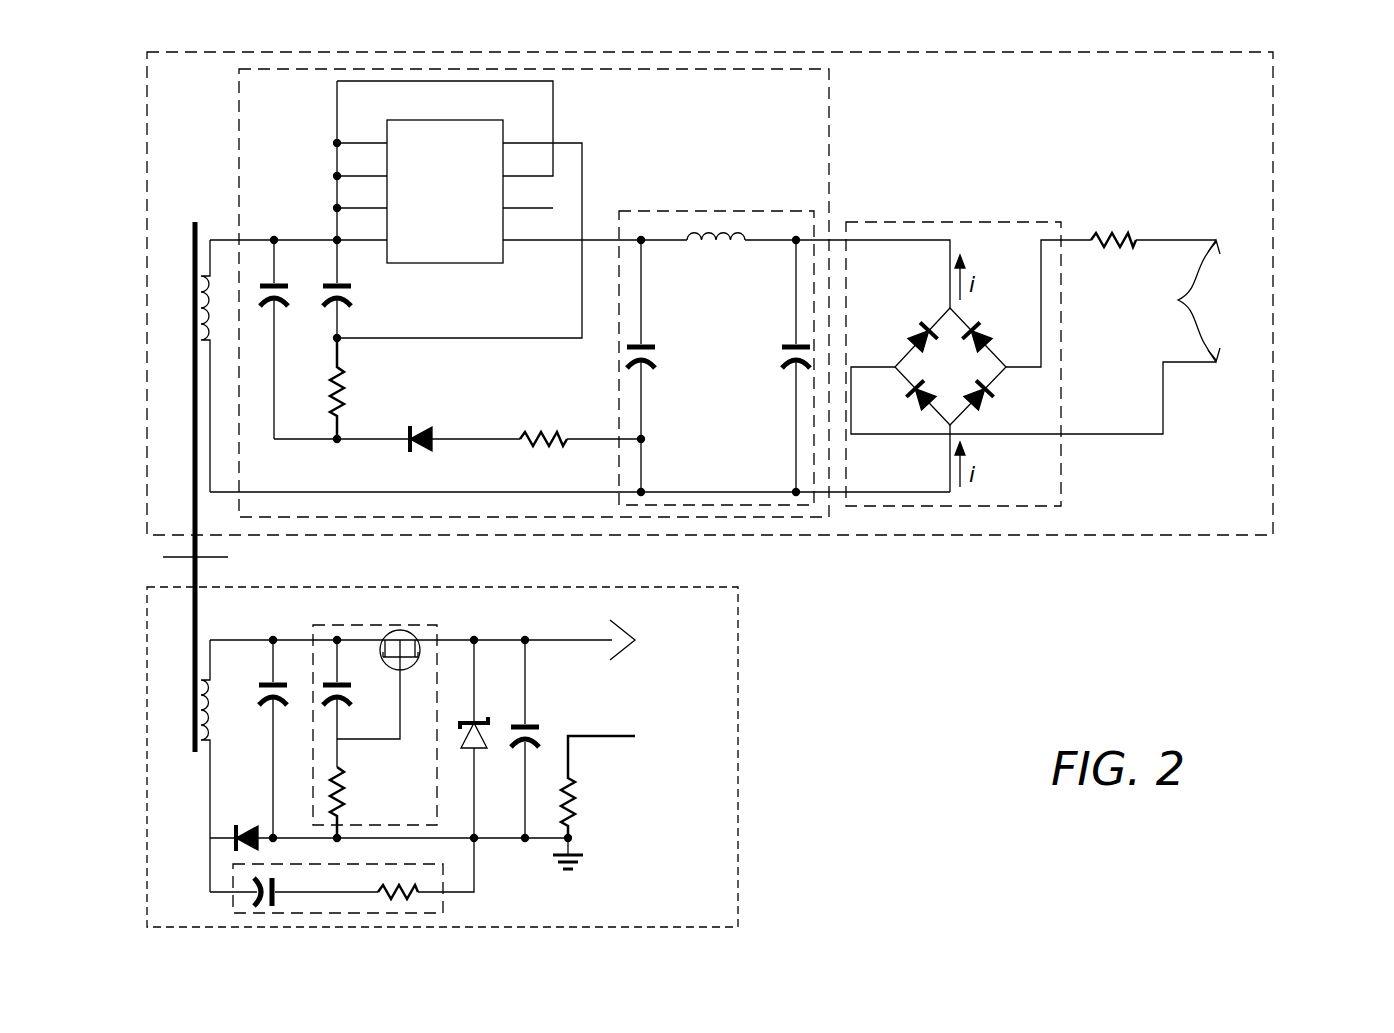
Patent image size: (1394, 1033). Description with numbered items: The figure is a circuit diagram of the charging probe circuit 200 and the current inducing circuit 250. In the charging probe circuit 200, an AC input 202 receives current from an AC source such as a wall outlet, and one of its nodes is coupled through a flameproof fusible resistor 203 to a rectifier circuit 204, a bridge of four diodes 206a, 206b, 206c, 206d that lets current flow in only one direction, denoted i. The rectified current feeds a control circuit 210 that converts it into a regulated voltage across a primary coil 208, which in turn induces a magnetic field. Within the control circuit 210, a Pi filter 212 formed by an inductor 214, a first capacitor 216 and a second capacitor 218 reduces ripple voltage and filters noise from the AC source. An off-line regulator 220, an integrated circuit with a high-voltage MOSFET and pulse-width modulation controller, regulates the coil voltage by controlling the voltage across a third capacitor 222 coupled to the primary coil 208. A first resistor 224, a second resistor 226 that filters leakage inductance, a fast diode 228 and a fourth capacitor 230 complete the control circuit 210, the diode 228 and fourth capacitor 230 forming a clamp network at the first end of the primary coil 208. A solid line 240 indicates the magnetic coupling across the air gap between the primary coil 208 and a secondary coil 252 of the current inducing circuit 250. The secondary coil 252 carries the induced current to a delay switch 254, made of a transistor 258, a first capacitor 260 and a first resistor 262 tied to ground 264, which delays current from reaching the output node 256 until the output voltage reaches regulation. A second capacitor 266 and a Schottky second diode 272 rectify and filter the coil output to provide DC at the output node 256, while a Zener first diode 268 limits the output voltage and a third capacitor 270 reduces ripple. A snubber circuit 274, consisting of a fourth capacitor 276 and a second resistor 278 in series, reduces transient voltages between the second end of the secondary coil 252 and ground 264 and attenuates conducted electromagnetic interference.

The charging probe circuit 200 is at (1274, 147).
The AC input 202 is at (1177, 301).
The resistor 203 is at (1110, 234).
The rectifier circuit 204 is at (985, 222).
The diode 206a is at (914, 330).
The diode 206b is at (986, 330).
The diode 206c is at (917, 398).
The diode 206d is at (992, 400).
The primary coil 208 is at (212, 300).
The control circuit 210 is at (829, 97).
The Pi filter 212 is at (720, 211).
The inductor 214 is at (723, 247).
The first capacitor 216 is at (788, 360).
The second capacitor 218 is at (657, 360).
The off-line regulator 220 is at (450, 120).
The third capacitor 222 is at (352, 290).
The first resistor 224 is at (346, 392).
The second resistor 226 is at (540, 428).
The diode 228 is at (418, 428).
The fourth capacitor 230 is at (289, 298).
The solid line 240 is at (190, 577).
The current inducing circuit 250 is at (738, 687).
The secondary coil 252 is at (212, 700).
The delay switch 254 is at (368, 625).
The output node 256 is at (646, 640).
The transistor 258 is at (380, 645).
The first capacitor 260 is at (352, 694).
The first resistor 262 is at (346, 800).
The ground 264 is at (568, 869).
The second capacitor 266 is at (258, 695).
The first diode 268 is at (486, 732).
The third capacitor 270 is at (541, 738).
The second diode 272 is at (244, 828).
The snubber circuit 274 is at (370, 865).
The fourth capacitor 276 is at (268, 888).
The second resistor 278 is at (396, 890).